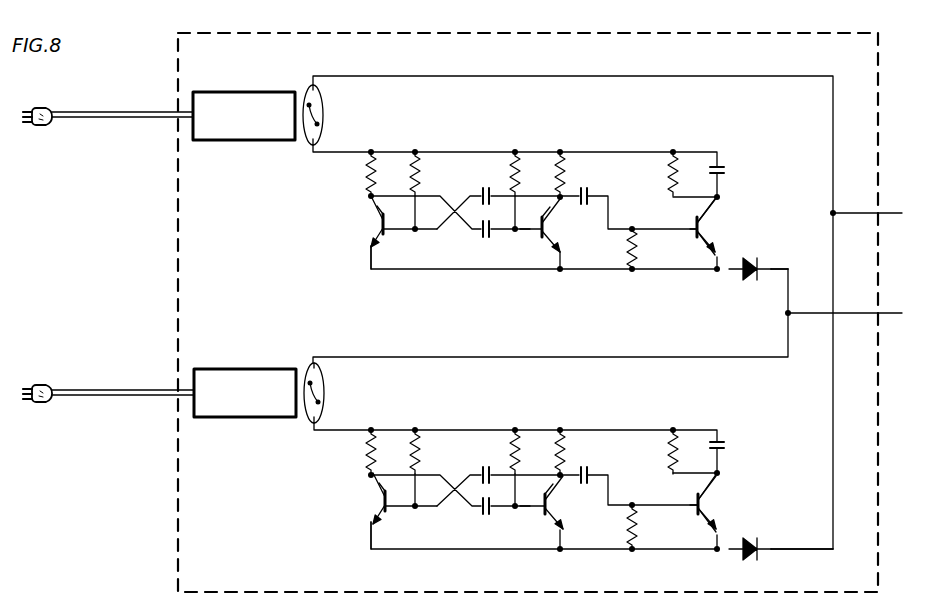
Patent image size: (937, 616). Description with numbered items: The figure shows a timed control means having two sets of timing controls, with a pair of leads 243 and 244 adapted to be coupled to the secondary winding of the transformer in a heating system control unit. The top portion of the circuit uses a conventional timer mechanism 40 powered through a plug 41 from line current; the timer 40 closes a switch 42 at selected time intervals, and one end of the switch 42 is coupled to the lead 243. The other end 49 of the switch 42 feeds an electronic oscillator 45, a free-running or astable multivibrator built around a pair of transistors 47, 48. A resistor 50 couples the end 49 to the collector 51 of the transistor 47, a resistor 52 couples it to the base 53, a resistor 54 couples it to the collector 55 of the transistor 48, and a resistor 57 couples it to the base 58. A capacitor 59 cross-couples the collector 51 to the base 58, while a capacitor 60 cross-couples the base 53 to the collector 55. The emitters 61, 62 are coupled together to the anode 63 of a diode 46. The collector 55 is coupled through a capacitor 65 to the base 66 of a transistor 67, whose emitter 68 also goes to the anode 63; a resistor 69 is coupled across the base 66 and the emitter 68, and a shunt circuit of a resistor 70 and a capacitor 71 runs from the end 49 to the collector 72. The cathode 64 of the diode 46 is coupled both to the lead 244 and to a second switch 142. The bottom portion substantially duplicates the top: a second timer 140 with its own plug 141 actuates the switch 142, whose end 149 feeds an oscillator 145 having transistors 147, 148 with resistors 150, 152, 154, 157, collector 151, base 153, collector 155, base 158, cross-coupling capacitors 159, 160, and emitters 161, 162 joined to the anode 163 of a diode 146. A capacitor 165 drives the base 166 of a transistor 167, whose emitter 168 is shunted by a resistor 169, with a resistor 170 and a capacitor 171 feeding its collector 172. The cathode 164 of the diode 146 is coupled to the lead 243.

The timer mechanism 40 is at (222, 92).
The plug 41 is at (44, 110).
The switch 42 is at (322, 110).
The electronic oscillator 45 is at (445, 135).
The diode 46 is at (769, 247).
The transistor 47 is at (358, 238).
The transistor 48 is at (581, 234).
The end of the switch 49 is at (322, 151).
The resistor 50 is at (366, 181).
The collector 51 is at (377, 213).
The resistor 52 is at (412, 156).
The base 53 is at (415, 231).
The resistor 54 is at (558, 157).
The collector 55 is at (548, 219).
The resistor 57 is at (512, 157).
The base 58 is at (528, 234).
The capacitor 59 is at (480, 232).
The capacitor 60 is at (482, 195).
The emitter 61 is at (372, 247).
The emitter 62 is at (558, 262).
The anode 63 is at (742, 278).
The cathode 64 is at (758, 276).
The capacitor 65 is at (588, 193).
The base 66 is at (694, 226).
The transistor 67 is at (743, 235).
The emitter 68 is at (710, 244).
The resistor 69 is at (627, 248).
The resistor 70 is at (671, 158).
The capacitor 71 is at (724, 169).
The collector 72 is at (716, 205).
The lead 243 is at (845, 208).
The lead 244 is at (850, 313).
The timer 140 is at (218, 369).
The plug 141 is at (40, 388).
The switch 142 is at (324, 388).
The electronic oscillator 145 is at (447, 420).
The diode 146 is at (769, 536).
The transistor 147 is at (360, 515).
The transistor 148 is at (583, 513).
The end of the switch 149 is at (322, 429).
The resistor 150 is at (366, 450).
The collector 151 is at (378, 491).
The resistor 152 is at (412, 436).
The base 153 is at (400, 508).
The resistor 154 is at (558, 436).
The collector 155 is at (552, 498).
The resistor 157 is at (512, 436).
The base 158 is at (532, 510).
The capacitor 159 is at (480, 509).
The capacitor 160 is at (482, 473).
The emitter 161 is at (376, 524).
The emitter 162 is at (558, 540).
The anode 163 is at (742, 560).
The cathode 164 is at (760, 560).
The capacitor 165 is at (588, 472).
The base 166 is at (694, 503).
The transistor 167 is at (741, 515).
The emitter 168 is at (708, 524).
The resistor 169 is at (630, 551).
The resistor 170 is at (670, 437).
The capacitor 171 is at (725, 443).
The collector 172 is at (716, 491).